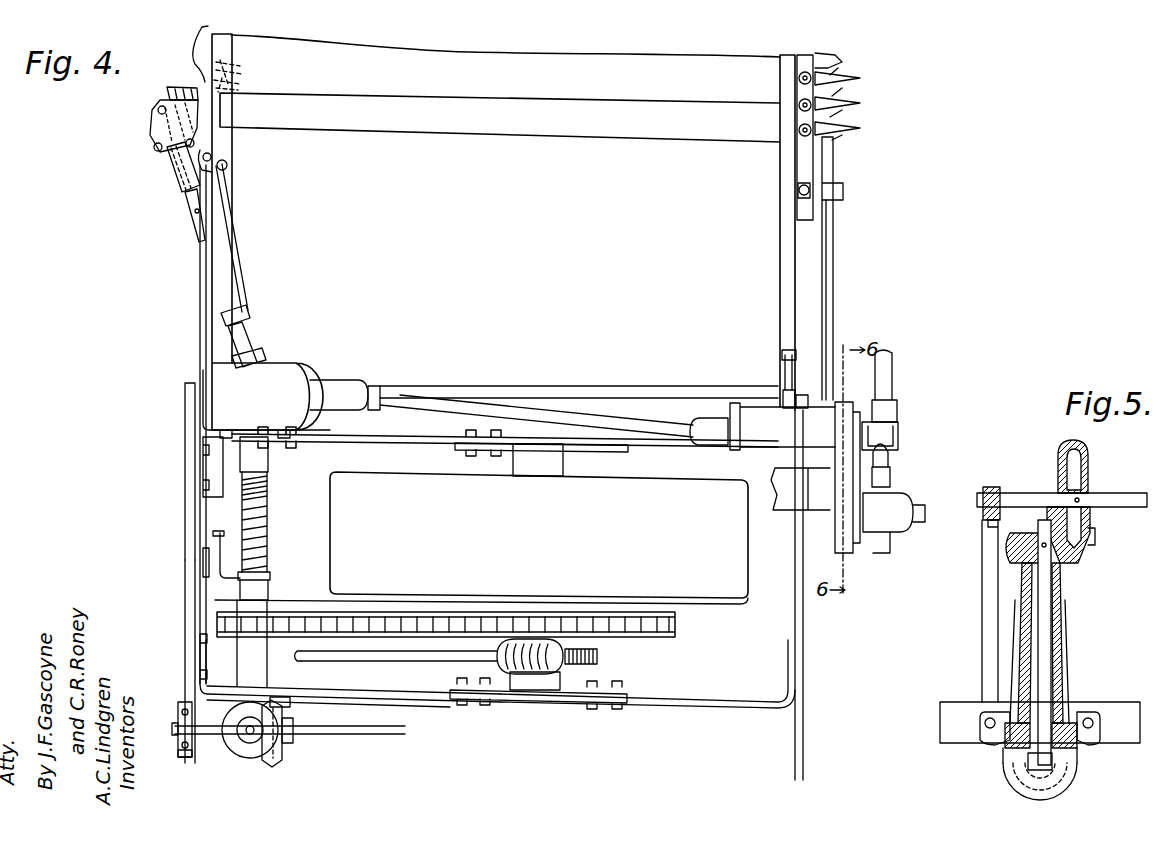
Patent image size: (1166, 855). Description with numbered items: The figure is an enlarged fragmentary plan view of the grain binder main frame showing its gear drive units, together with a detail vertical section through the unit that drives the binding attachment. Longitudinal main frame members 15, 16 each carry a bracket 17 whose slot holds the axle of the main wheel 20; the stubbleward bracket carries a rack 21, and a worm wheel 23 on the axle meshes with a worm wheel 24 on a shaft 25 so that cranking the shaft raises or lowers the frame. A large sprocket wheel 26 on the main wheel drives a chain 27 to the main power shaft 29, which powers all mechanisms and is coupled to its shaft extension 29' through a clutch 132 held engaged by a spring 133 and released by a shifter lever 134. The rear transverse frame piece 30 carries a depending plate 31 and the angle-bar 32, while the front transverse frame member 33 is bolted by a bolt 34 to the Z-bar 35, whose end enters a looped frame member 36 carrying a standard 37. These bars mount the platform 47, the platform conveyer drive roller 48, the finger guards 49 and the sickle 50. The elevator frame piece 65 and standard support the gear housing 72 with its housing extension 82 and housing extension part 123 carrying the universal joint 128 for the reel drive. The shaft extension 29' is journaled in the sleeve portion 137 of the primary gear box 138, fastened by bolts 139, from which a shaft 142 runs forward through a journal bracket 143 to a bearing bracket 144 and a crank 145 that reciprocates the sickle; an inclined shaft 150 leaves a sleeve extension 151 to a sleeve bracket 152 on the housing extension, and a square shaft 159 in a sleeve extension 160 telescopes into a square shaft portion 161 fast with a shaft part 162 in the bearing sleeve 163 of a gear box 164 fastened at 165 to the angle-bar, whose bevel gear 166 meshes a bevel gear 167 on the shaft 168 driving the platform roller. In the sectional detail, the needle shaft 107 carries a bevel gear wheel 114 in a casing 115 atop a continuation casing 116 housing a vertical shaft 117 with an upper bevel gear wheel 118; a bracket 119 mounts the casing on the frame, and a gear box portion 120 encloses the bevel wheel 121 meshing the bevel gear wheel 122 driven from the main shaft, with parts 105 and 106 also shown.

In FIG. 4, the main frame member 15 is at (745, 702).
In FIG. 5, the main frame member 15 is at (1125, 745).
In FIG. 4, the main frame member 16 is at (638, 447).
In FIG. 4, the bracket 17 is at (560, 450).
In FIG. 4, the main wheel 20 is at (745, 598).
In FIG. 4, the rack 21 is at (522, 675).
In FIG. 4, the worm wheel 23 is at (600, 662).
In FIG. 4, the worm wheel 24 is at (520, 672).
In FIG. 4, the shaft 25 is at (412, 704).
In FIG. 4, the large sprocket wheel 26 is at (660, 604).
In FIG. 4, the chain 27 is at (330, 612).
In FIG. 4, the main power shaft 29 is at (272, 643).
In FIG. 4, the shaft extension 29' is at (281, 489).
In FIG. 4, the transverse frame piece 30 is at (195, 585).
In FIG. 4, the depending plate 31 is at (210, 462).
In FIG. 4, the angle-bar 32 is at (234, 208).
In FIG. 4, the transverse frame member 33 is at (805, 626).
In FIG. 4, the bolt 34 is at (798, 190).
In FIG. 4, the Z-bar 35 is at (780, 248).
In FIG. 4, the looped frame member 36 is at (895, 382).
In FIG. 4, the standard 37 is at (900, 425).
In FIG. 4, the platform 47 is at (440, 56).
In FIG. 4, the platform conveyer drive roller 48 is at (428, 87).
In FIG. 4, the finger guards 49 is at (855, 128).
In FIG. 4, the sickle 50 is at (845, 64).
In FIG. 4, the elevator frame piece 65 is at (183, 440).
In FIG. 4, the gear housing 72 is at (855, 468).
In FIG. 4, the housing extension 82 is at (760, 440).
In FIG. 4, the plate 105 is at (178, 758).
In FIG. 5, the plate 105 is at (1010, 466).
In FIG. 4, the bearing 106 is at (190, 758).
In FIG. 5, the bearing 106 is at (982, 526).
In FIG. 4, the needle shaft 107 is at (178, 726).
In FIG. 5, the needle shaft 107 is at (1132, 507).
In FIG. 4, the bevel gear wheel 114 is at (282, 762).
In FIG. 5, the bevel gear wheel 114 is at (1089, 470).
In FIG. 4, the casing 115 is at (295, 738).
In FIG. 5, the casing 115 is at (1090, 543).
In FIG. 4, the continuation casing 116 is at (255, 758).
In FIG. 5, the continuation casing 116 is at (1065, 616).
In FIG. 4, the vertical shaft 117 is at (834, 166).
In FIG. 5, the vertical shaft 117 is at (1052, 584).
In FIG. 5, the bevel gear wheel 118 is at (1010, 548).
In FIG. 4, the bracket 119 is at (292, 702).
In FIG. 5, the bracket 119 is at (1082, 710).
In FIG. 5, the gear box portion 120 is at (1005, 745).
In FIG. 5, the bevel wheel 121 is at (1072, 750).
In FIG. 5, the bevel gear wheel 122 is at (1005, 785).
In FIG. 4, the housing extension part 123 is at (900, 510).
In FIG. 4, the universal joint 128 is at (900, 432).
In FIG. 4, the clutch 132 is at (264, 578).
In FIG. 4, the spring 133 is at (268, 518).
In FIG. 4, the shifter lever 134 is at (218, 540).
In FIG. 4, the sleeve portion 137 is at (268, 458).
In FIG. 4, the primary gear box 138 is at (270, 360).
In FIG. 4, the bolts 139 is at (235, 428).
In FIG. 4, the shaft 142 is at (606, 385).
In FIG. 4, the journal bracket 143 is at (332, 380).
In FIG. 4, the bearing bracket 144 is at (796, 398).
In FIG. 4, the crank 145 is at (785, 370).
In FIG. 4, the shaft 150 is at (548, 374).
In FIG. 4, the sleeve extension 151 is at (374, 392).
In FIG. 4, the sleeve bracket 152 is at (690, 418).
In FIG. 4, the shaft 159 is at (206, 298).
In FIG. 4, the sleeve extension 160 is at (250, 322).
In FIG. 4, the square shaft portion 161 is at (236, 245).
In FIG. 4, the shaft part 162 is at (188, 200).
In FIG. 4, the bearing sleeve 163 is at (172, 160).
In FIG. 4, the gear box 164 is at (168, 92).
In FIG. 4, the fastening 165 is at (200, 27).
In FIG. 4, the bevel gear 166 is at (152, 118).
In FIG. 4, the bevel gear 167 is at (232, 66).
In FIG. 4, the shaft 168 is at (236, 86).